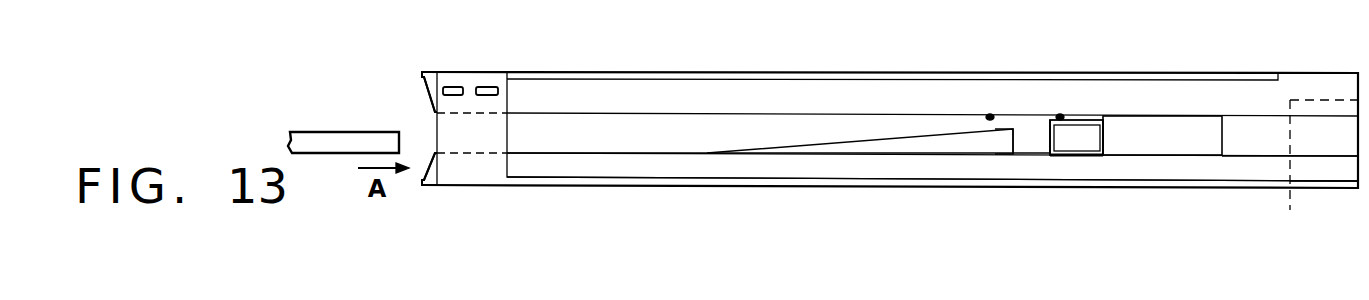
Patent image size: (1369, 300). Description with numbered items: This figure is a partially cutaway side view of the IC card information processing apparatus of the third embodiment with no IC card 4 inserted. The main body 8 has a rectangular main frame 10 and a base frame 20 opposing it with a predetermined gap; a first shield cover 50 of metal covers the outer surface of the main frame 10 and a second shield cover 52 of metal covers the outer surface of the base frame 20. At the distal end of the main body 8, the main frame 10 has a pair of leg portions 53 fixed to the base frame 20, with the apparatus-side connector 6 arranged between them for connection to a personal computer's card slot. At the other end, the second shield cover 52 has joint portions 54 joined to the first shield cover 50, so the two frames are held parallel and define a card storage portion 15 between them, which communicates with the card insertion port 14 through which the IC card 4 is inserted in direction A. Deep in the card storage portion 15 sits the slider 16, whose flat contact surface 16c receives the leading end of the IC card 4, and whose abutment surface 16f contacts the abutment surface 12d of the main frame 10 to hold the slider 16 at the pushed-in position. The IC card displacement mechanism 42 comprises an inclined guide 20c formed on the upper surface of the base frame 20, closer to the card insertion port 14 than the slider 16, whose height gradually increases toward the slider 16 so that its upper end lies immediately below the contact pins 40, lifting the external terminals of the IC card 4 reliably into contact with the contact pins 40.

The IC card 4 is at (321, 132).
The apparatus-side connector 6 is at (1322, 143).
The main body 8 is at (1308, 73).
The main frame 10 is at (632, 82).
The abutment surface 12d is at (1222, 130).
The card insertion port 14 is at (425, 127).
The card storage portion 15 is at (635, 138).
The slider 16 is at (1085, 145).
The flat contact surface 16c is at (1045, 147).
The abutment surface 16f is at (1103, 133).
The base frame 20 is at (717, 167).
The inclined guide 20c is at (940, 148).
The contact pins 40 is at (990, 114).
The IC card displacement mechanism 42 is at (978, 142).
The first shield cover 50 is at (752, 73).
The second shield cover 52 is at (833, 183).
The leg portions 53 is at (1268, 152).
The joint portions 54 is at (502, 160).